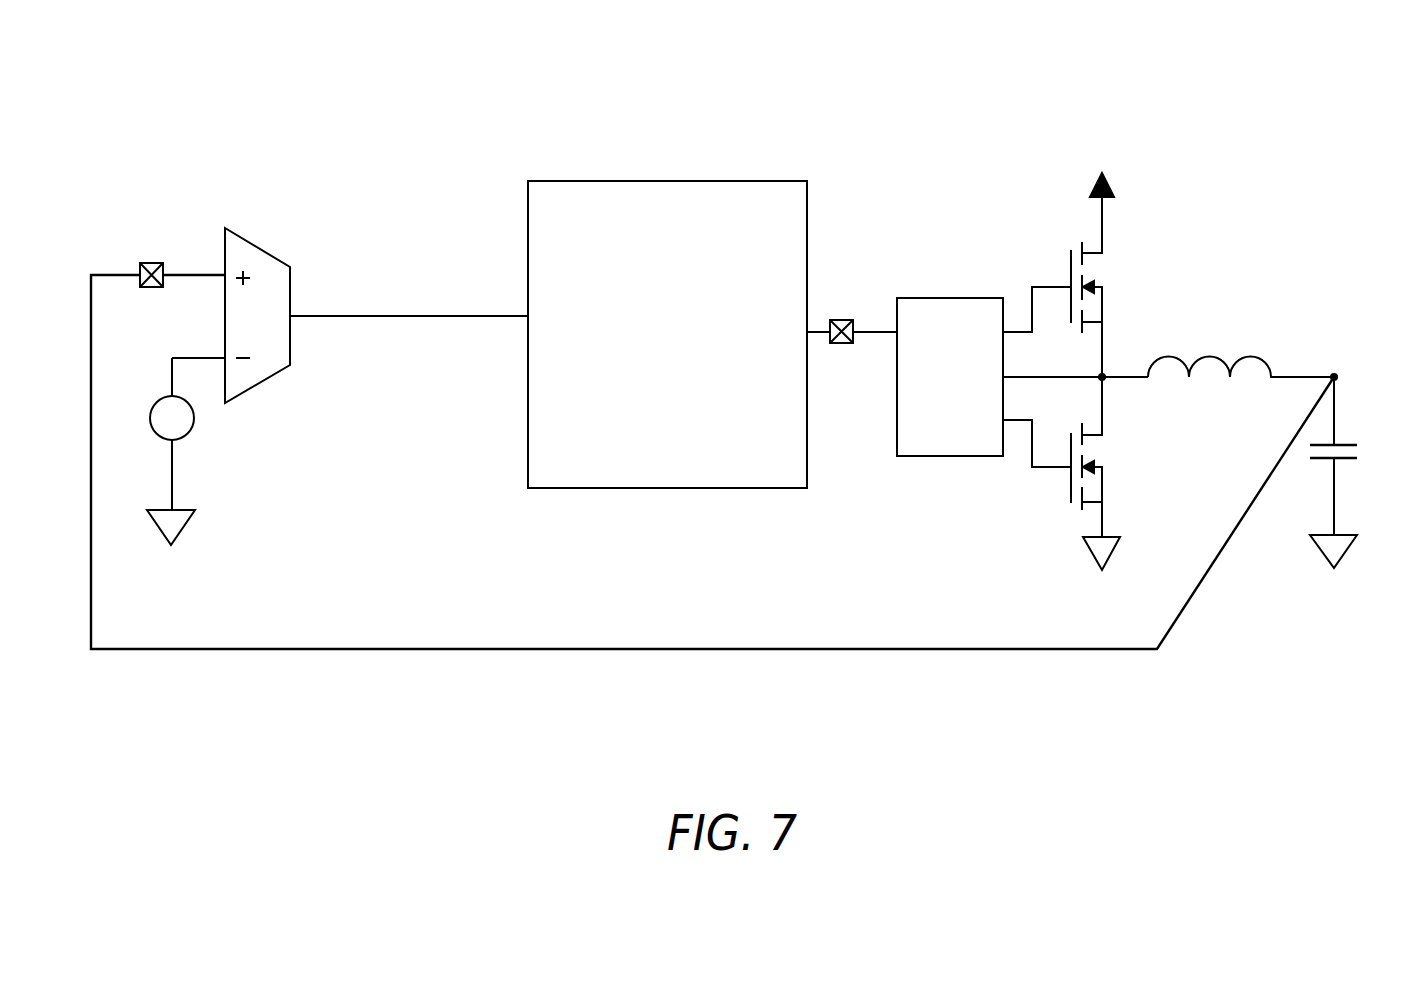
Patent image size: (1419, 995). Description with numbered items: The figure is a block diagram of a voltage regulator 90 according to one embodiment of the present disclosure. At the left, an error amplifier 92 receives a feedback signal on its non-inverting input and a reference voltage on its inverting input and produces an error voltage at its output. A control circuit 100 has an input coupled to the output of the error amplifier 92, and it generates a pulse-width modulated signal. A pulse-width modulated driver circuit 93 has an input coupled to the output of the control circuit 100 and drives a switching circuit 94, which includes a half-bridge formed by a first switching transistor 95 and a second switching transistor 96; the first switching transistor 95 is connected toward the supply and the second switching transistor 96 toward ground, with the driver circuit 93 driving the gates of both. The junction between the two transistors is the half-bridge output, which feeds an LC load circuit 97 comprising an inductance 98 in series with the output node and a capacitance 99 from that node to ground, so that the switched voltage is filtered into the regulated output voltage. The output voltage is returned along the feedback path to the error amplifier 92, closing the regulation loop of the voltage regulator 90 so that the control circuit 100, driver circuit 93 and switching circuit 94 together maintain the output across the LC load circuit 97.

The voltage regulator 90 is at (1136, 90).
The error amplifier 92 is at (253, 272).
The pulse-width modulated driver circuit 93 is at (928, 315).
The switching circuit 94 is at (1123, 262).
The first switching transistor 95 is at (1072, 270).
The second switching transistor 96 is at (1072, 482).
The LC load circuit 97 is at (1292, 299).
The inductance 98 is at (1254, 355).
The capacitance 99 is at (1342, 443).
The control circuit 100 is at (723, 191).